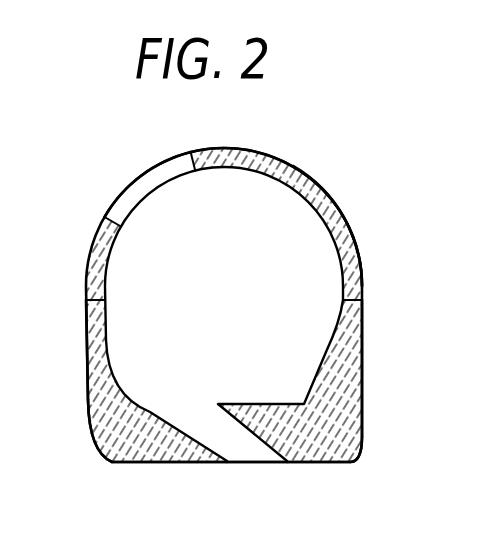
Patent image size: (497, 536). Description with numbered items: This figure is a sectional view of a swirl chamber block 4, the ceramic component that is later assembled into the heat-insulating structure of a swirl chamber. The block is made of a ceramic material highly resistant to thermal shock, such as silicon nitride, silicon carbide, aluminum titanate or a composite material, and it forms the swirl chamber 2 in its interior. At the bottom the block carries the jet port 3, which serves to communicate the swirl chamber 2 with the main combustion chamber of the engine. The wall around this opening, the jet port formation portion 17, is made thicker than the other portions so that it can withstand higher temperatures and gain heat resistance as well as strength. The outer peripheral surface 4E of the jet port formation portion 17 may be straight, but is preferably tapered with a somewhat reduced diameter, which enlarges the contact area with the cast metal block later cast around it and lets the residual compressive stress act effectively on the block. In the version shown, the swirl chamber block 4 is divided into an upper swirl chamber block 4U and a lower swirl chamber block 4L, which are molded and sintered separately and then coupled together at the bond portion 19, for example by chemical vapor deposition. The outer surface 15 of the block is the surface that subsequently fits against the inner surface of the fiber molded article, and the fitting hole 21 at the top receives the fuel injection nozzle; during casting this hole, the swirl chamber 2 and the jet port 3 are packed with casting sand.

The swirl chamber 2 is at (240, 296).
The jet port 3 is at (237, 438).
The swirl chamber block 4 is at (356, 233).
The upper swirl chamber block 4U is at (259, 153).
The lower swirl chamber block 4L is at (105, 388).
The outer peripheral surface 4E is at (97, 446).
The outer surface 15 is at (310, 180).
The jet port formation portion 17 is at (130, 436).
The bond portion 19 is at (86, 289).
The fitting hole 21 is at (186, 157).